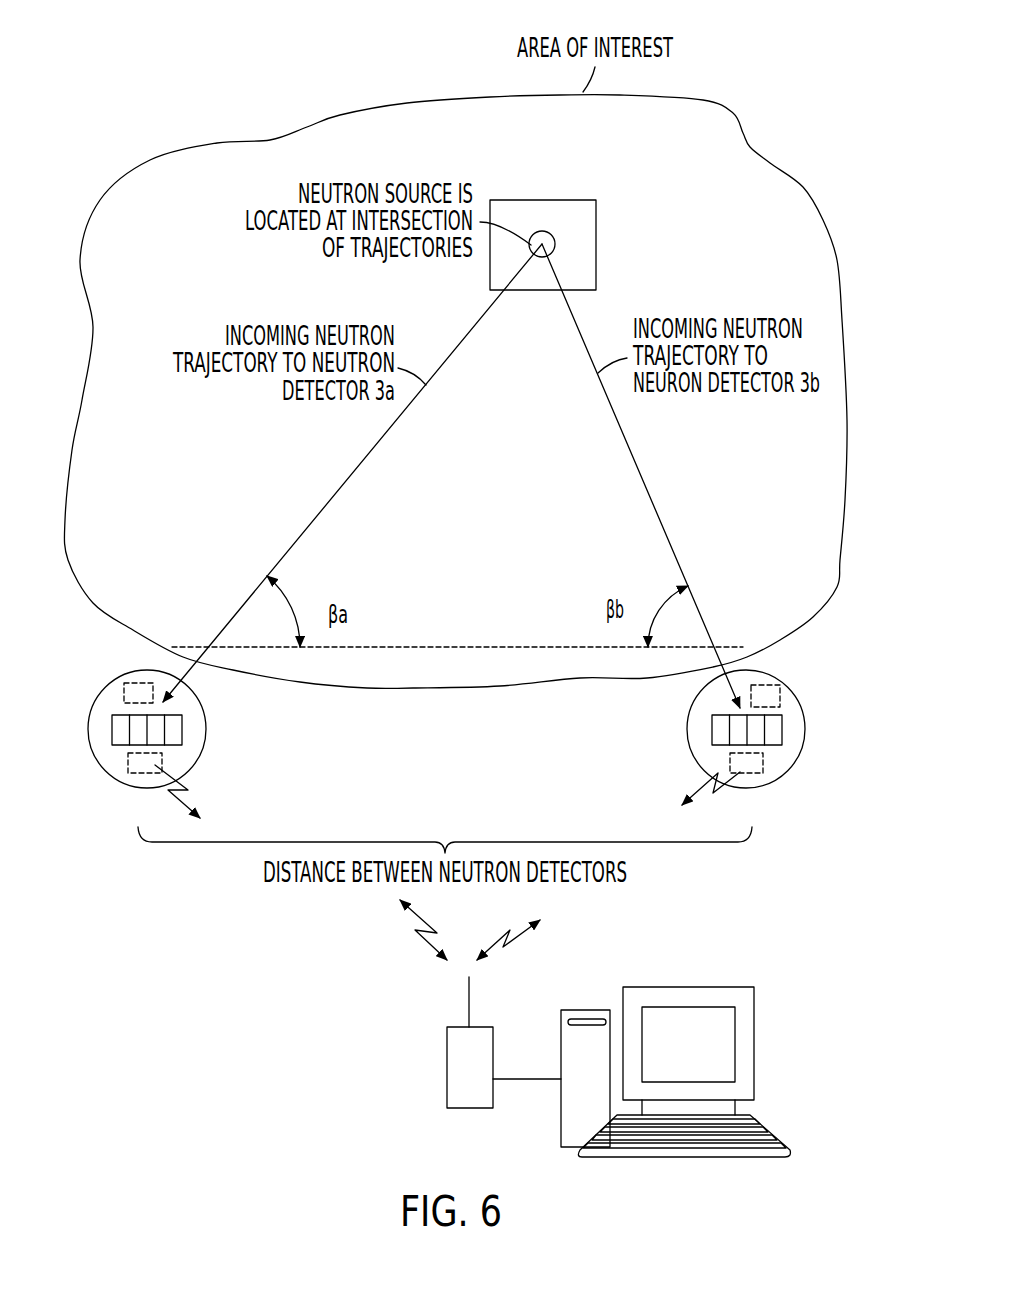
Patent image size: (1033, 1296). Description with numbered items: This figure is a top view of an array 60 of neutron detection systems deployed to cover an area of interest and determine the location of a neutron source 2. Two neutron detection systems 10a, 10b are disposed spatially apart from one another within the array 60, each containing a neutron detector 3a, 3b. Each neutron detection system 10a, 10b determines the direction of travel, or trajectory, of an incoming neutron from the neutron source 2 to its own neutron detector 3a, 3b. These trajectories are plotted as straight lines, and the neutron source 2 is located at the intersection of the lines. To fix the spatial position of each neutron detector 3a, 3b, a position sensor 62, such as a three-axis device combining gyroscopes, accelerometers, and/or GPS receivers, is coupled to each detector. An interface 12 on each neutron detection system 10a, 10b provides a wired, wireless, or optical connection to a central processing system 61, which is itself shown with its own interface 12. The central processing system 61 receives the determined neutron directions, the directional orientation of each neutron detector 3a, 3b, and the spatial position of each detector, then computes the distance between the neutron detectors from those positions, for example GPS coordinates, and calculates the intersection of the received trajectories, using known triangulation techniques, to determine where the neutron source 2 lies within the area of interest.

The array of neutron detection systems 60 is at (217, 40).
The neutron source 2 is at (543, 197).
The neutron detector 3a is at (100, 764).
The neutron detector 3b is at (790, 770).
The neutron detection system 10a is at (110, 724).
The neutron detection system 10b is at (786, 734).
The interface 12 is at (128, 777).
The central processing system 61 is at (586, 1009).
The position sensor 62 is at (124, 678).